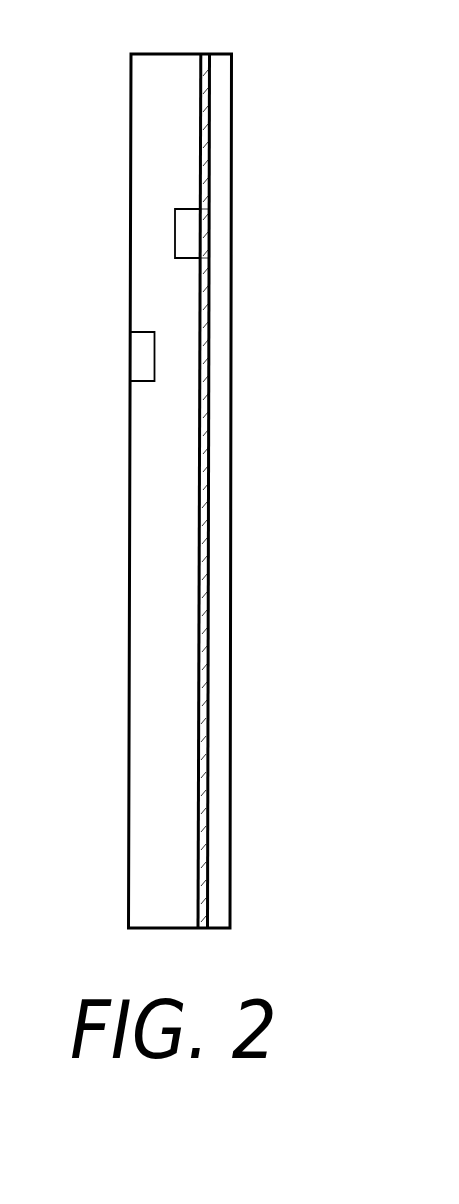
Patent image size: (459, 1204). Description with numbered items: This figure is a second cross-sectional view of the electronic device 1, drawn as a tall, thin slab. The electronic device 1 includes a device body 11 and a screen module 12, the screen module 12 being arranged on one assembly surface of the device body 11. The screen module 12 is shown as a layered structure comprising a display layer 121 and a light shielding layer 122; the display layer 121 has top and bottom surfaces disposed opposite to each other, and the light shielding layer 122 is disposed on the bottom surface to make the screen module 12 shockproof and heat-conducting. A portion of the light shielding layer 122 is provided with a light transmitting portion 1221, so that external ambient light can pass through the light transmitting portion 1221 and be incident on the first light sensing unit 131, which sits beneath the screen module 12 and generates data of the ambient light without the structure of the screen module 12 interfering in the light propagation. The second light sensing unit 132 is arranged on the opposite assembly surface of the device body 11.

The electronic device 1 is at (192, 468).
The device body 11 is at (150, 552).
The screen module 12 is at (282, 491).
The display layer 121 is at (218, 293).
The light shielding layer 122 is at (207, 388).
The light transmitting portion 1221 is at (205, 221).
The first light sensing unit 131 is at (192, 240).
The second light sensing unit 132 is at (147, 345).